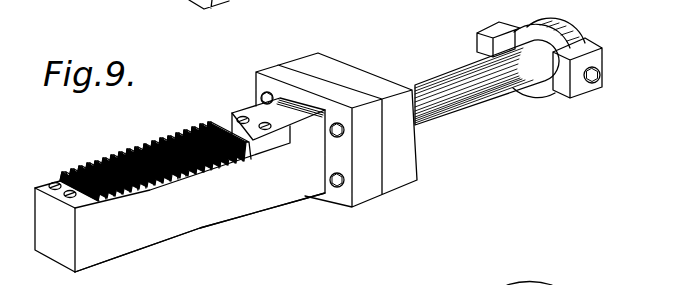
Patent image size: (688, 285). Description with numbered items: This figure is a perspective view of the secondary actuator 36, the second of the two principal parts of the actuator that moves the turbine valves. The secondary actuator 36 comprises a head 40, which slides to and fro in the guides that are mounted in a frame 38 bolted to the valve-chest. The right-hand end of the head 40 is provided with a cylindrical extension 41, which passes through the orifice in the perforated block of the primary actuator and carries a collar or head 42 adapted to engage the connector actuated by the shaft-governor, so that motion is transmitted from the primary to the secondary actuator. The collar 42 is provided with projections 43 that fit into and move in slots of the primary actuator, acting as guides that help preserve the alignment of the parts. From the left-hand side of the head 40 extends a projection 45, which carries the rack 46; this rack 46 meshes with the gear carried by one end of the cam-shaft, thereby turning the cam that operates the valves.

The secondary actuator 36 is at (180, 191).
The frame 38 is at (612, 282).
The head 40 is at (278, 72).
The cylindrical extension 41 is at (440, 76).
The collar or head 42 is at (567, 24).
The projections 43 is at (498, 27).
The projection 45 is at (129, 247).
The rack 46 is at (104, 157).